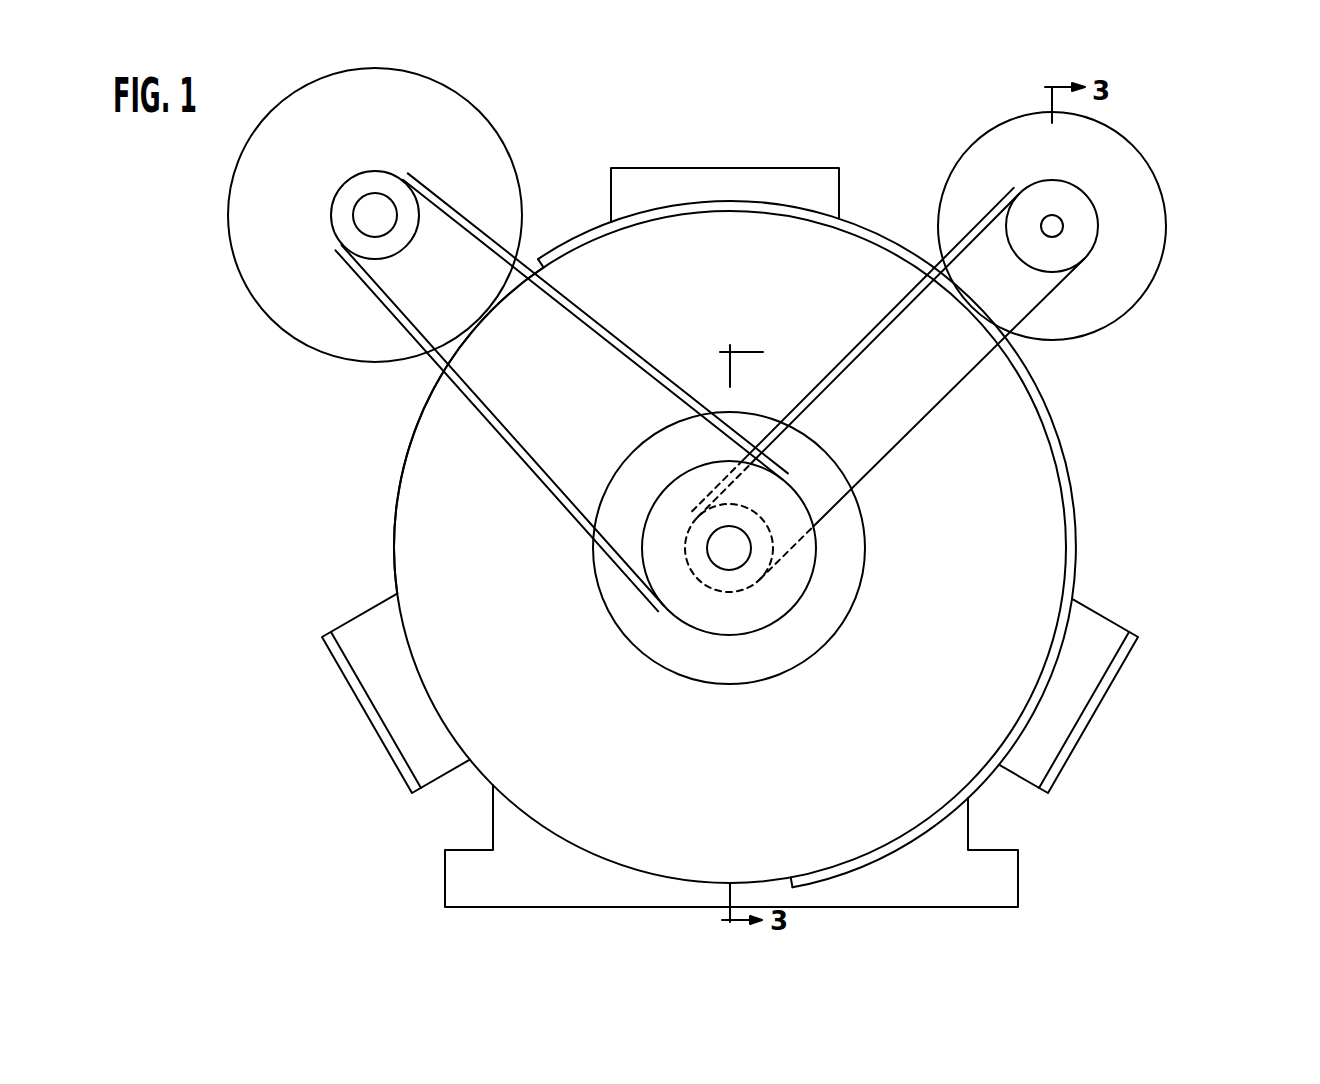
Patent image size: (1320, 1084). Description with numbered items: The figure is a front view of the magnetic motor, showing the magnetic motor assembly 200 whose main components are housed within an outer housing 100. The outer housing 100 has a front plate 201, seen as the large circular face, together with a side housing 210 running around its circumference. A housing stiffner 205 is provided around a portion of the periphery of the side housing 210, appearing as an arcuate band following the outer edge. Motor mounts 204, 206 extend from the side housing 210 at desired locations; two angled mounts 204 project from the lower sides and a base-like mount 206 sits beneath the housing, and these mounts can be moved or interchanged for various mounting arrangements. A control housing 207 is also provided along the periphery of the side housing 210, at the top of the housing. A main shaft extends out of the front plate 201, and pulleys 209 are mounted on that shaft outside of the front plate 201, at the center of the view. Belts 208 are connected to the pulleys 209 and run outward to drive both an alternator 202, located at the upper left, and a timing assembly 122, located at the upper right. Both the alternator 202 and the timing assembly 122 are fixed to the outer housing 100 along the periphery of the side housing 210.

The outer housing 100 is at (1062, 428).
The timing assembly 122 is at (1162, 185).
The magnetic motor assembly 200 is at (957, 616).
The front plate 201 is at (559, 670).
The alternator 202 is at (282, 278).
The motor mount 204 is at (340, 674).
The housing stiffner 205 is at (1072, 508).
The motor mount 206 is at (982, 872).
The control housing 207 is at (672, 167).
The belts 208 is at (590, 327).
The pulleys 209 is at (743, 592).
The side housing 210 is at (395, 528).